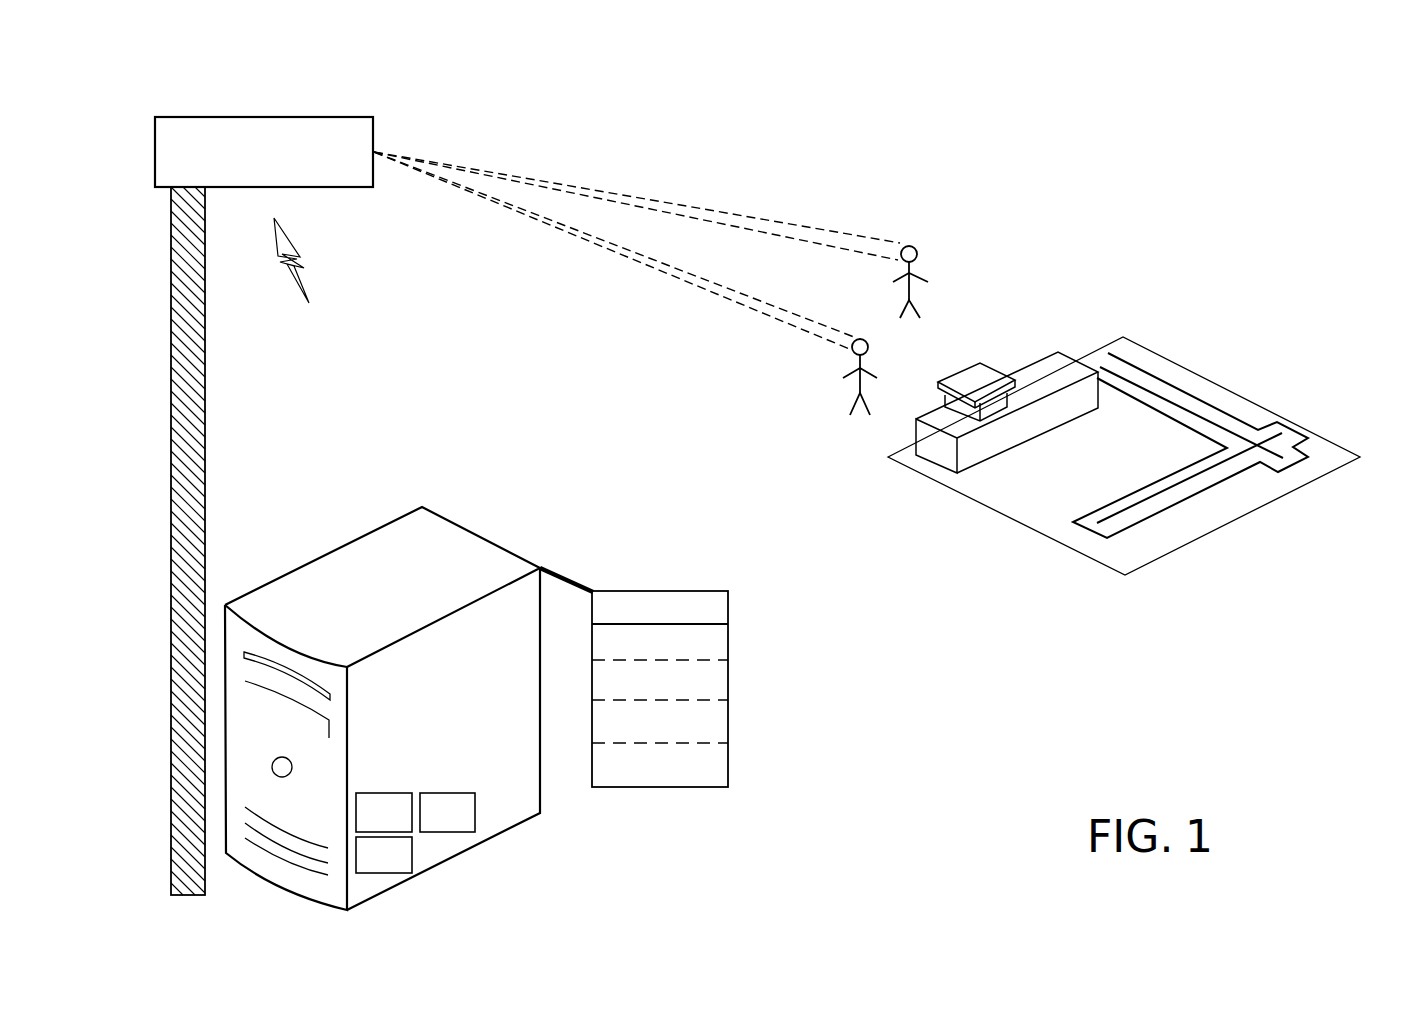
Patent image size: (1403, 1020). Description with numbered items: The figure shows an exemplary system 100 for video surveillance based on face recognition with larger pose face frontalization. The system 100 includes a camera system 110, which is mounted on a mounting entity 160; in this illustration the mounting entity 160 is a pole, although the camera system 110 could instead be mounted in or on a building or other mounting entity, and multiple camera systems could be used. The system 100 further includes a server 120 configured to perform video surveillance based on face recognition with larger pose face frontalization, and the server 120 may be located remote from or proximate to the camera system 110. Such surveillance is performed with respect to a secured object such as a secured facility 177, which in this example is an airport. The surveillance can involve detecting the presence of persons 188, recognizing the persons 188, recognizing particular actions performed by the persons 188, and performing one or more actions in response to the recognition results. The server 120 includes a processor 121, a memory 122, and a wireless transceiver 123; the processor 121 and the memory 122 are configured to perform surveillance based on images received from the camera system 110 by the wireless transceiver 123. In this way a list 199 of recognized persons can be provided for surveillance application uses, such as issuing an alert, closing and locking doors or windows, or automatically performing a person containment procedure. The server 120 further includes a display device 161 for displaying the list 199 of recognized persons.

The system 100 is at (880, 78).
The camera system 110 is at (243, 179).
The server 120 is at (343, 619).
The processor 121 is at (365, 826).
The memory 122 is at (429, 826).
The wireless transceiver 123 is at (365, 866).
The mounting entity 160 is at (219, 418).
The display device 161 is at (660, 590).
The secured facility 177 is at (1213, 360).
The persons 188 is at (912, 232).
The list 199 is at (744, 611).